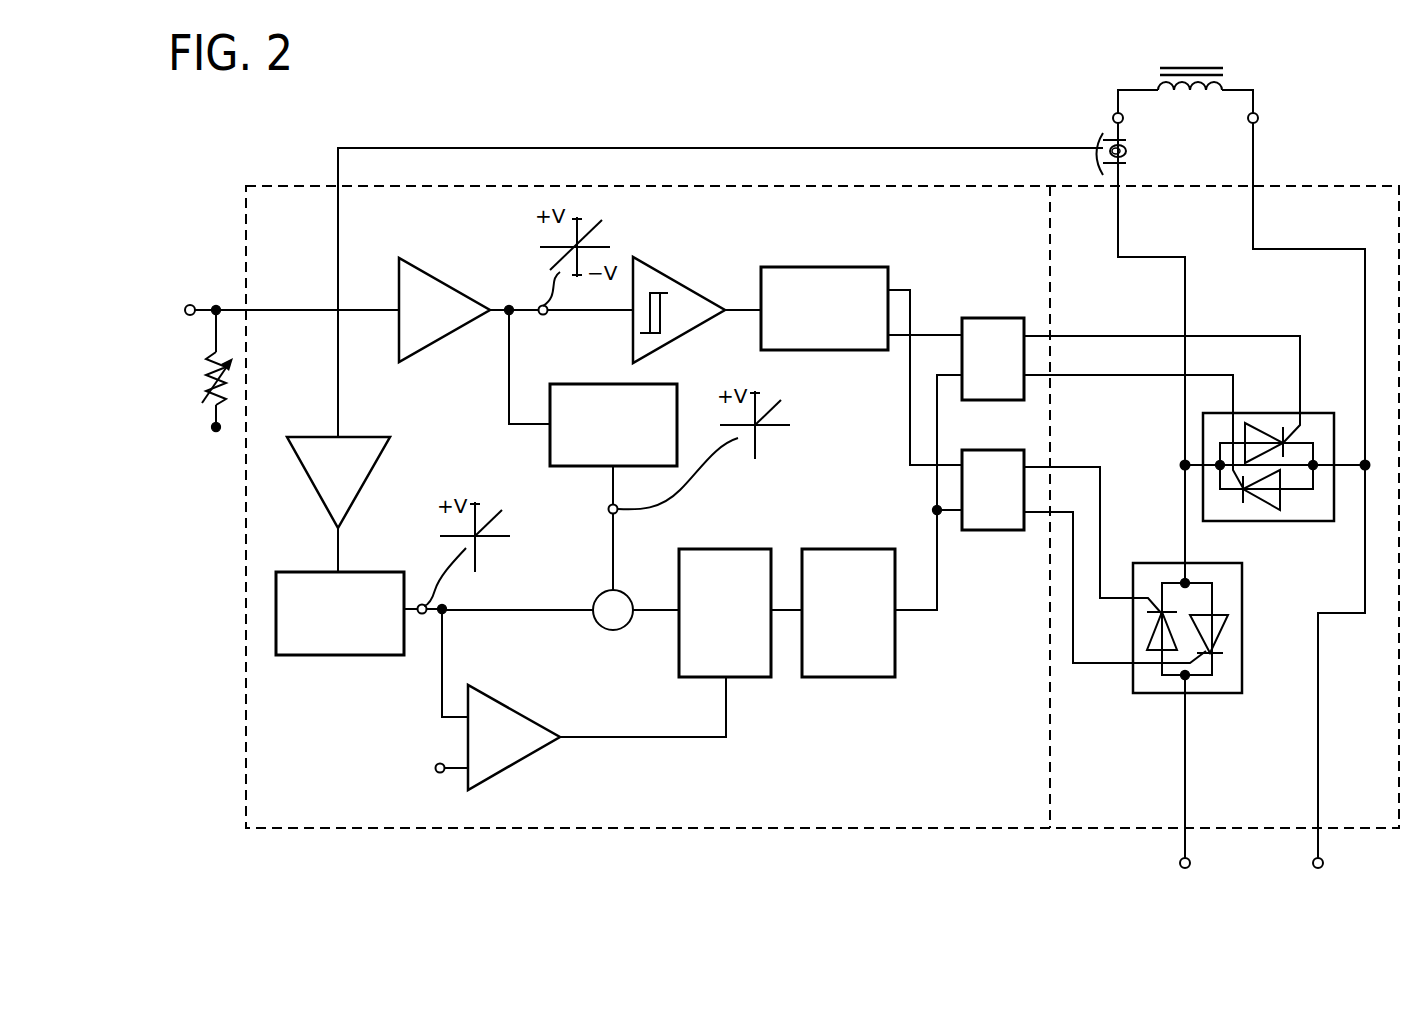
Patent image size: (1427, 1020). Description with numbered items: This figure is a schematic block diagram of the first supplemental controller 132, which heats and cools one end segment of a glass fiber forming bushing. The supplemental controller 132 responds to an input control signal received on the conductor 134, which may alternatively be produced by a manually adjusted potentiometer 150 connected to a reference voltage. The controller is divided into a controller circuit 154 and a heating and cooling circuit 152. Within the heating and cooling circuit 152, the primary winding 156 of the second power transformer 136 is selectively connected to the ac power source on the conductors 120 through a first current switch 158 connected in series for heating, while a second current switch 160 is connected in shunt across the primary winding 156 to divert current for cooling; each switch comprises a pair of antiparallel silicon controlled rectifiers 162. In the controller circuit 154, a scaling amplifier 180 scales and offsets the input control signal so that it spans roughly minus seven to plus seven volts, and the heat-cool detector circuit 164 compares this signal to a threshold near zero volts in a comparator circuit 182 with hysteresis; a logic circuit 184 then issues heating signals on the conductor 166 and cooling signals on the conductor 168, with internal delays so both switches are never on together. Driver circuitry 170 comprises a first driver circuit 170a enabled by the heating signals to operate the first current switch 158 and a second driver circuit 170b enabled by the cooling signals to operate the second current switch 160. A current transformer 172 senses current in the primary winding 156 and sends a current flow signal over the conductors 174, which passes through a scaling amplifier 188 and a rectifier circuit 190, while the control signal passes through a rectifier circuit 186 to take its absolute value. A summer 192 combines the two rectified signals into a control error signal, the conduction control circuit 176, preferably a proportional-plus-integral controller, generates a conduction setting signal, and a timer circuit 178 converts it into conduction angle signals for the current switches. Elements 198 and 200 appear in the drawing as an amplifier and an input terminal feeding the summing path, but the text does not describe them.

The conductors 120 is at (1180, 842).
The first supplemental controller 132 is at (740, 828).
The conductor 134 is at (238, 308).
The second power transformer 136 is at (1148, 62).
The potentiometer 150 is at (226, 381).
The heating and cooling circuit 152 is at (1268, 774).
The controller circuit 154 is at (855, 787).
The primary winding 156 is at (1200, 92).
The first current switch 158 is at (1152, 694).
The second current switch 160 is at (1298, 523).
The silicon controlled rectifiers 162 is at (1268, 425).
The heat-cool detector circuit 164 is at (500, 232).
The conductor 166 is at (915, 300).
The conductor 168 is at (932, 333).
The driver circuitry 170 is at (1040, 355).
The first driver circuit 170a is at (992, 530).
The second driver circuit 170b is at (1023, 322).
The current transformer 172 is at (1138, 164).
The conductors 174 is at (490, 147).
The conduction control circuit 176 is at (705, 549).
The timer circuit 178 is at (845, 677).
The scaling amplifier 180 is at (442, 280).
The comparator circuit 182 is at (697, 292).
The logic circuit 184 is at (848, 267).
The rectifier circuit 186 is at (613, 384).
The scaling amplifier 188 is at (370, 480).
The rectifier circuit 190 is at (362, 656).
The summer 192 is at (625, 628).
The amplifier 198 is at (529, 716).
The reference input 200 is at (435, 768).